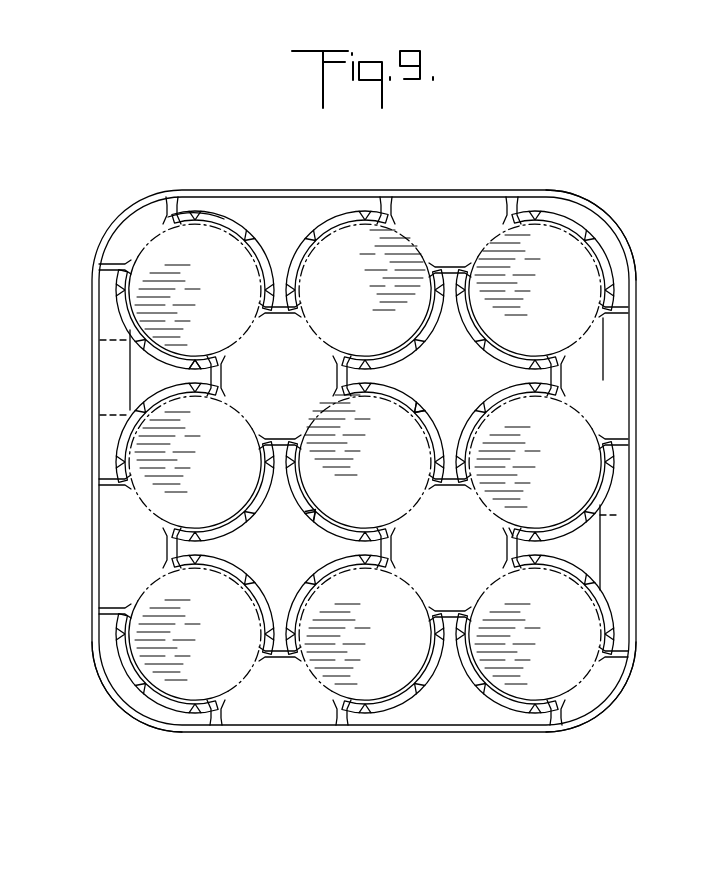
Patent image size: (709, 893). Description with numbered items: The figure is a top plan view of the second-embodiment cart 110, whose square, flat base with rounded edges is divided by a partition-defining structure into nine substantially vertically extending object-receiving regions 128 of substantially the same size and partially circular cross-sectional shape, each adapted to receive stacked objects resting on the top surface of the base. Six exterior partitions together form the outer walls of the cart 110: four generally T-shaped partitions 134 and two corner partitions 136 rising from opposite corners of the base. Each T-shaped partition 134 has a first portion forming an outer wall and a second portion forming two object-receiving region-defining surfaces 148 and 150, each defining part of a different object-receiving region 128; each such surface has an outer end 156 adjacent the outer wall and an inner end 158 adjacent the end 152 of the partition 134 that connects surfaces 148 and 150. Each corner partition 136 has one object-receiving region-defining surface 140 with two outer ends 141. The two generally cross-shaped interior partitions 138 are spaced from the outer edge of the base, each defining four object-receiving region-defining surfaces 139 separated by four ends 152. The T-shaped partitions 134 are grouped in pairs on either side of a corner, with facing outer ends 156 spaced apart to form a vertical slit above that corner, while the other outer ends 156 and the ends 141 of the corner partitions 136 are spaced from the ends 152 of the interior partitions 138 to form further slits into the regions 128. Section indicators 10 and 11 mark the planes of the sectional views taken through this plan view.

The cart 110 is at (368, 443).
The object-receiving region 128 is at (211, 266).
The generally T-shaped partition 134 is at (310, 178).
The corner partition 136 is at (582, 208).
The interior partition 138 is at (495, 390).
The object-receiving region-defining surface 139 is at (468, 428).
The object-receiving region-defining surface 140 is at (598, 252).
The outer end 141 is at (510, 208).
The object-receiving region-defining surface 148 is at (215, 212).
The object-receiving region-defining surface 150 is at (338, 210).
The end 152 is at (336, 373).
The outer end 156 is at (160, 214).
The inner end 158 is at (195, 358).
The section line 10- 10 is at (78, 540).
The section line 11- 11 is at (661, 166).